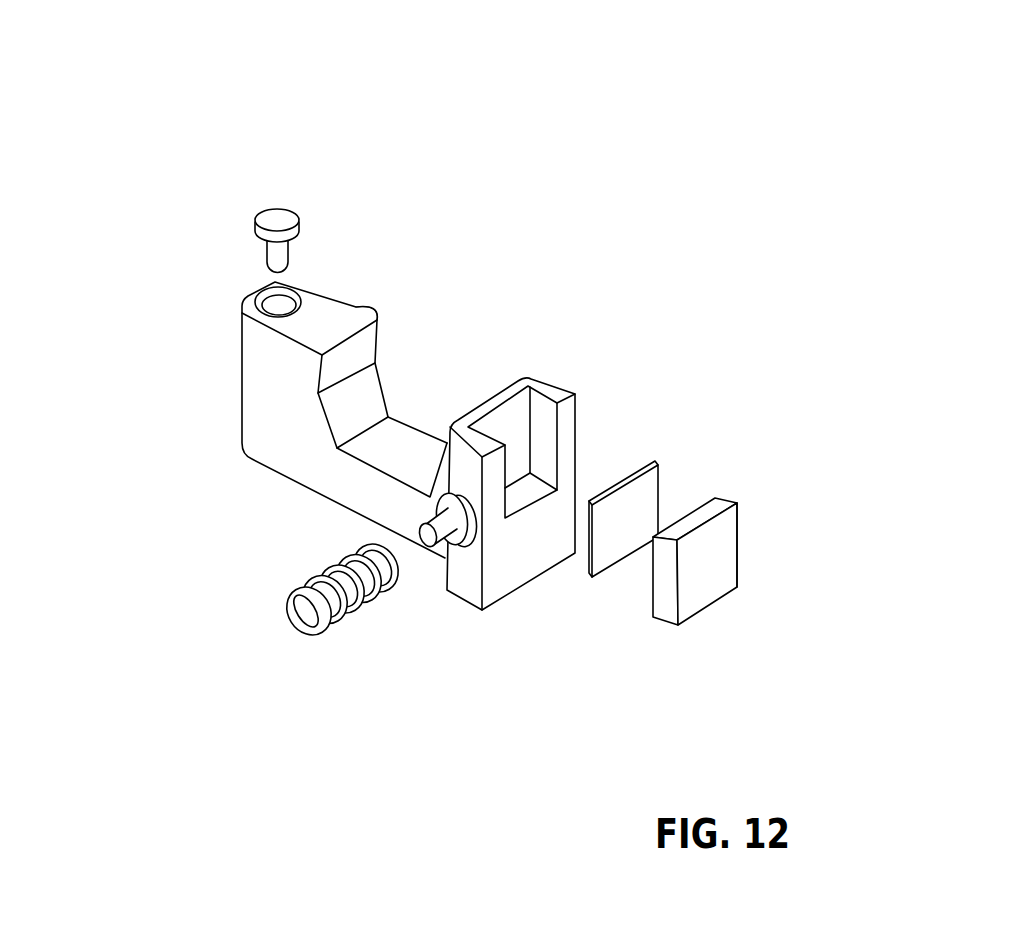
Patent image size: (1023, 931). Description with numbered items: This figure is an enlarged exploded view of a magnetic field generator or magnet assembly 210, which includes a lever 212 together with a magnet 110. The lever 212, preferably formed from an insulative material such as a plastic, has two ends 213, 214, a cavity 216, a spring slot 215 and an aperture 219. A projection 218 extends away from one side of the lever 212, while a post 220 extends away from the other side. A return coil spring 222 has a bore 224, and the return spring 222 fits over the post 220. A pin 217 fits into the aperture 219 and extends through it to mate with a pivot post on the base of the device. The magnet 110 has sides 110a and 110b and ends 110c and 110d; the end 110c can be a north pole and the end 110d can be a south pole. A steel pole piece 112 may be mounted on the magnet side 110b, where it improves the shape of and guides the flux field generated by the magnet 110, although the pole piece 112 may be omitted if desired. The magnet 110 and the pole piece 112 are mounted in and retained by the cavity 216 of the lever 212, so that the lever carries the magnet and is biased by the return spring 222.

The magnet assembly 210 is at (869, 143).
The lever 212 is at (260, 377).
The end 213 is at (242, 413).
The end 214 is at (524, 476).
The spring slot 215 is at (432, 361).
The cavity 216 is at (545, 440).
The pin 217 is at (282, 220).
The projection 218 is at (368, 316).
The aperture 219 is at (272, 307).
The post 220 is at (416, 532).
The return coil spring 222 is at (281, 632).
The bore 224 is at (307, 637).
The steel pole piece 112 is at (643, 490).
The magnet 110 is at (770, 553).
The side 110a is at (738, 575).
The side 110b is at (713, 500).
The end 110c is at (668, 603).
The end 110d is at (738, 532).